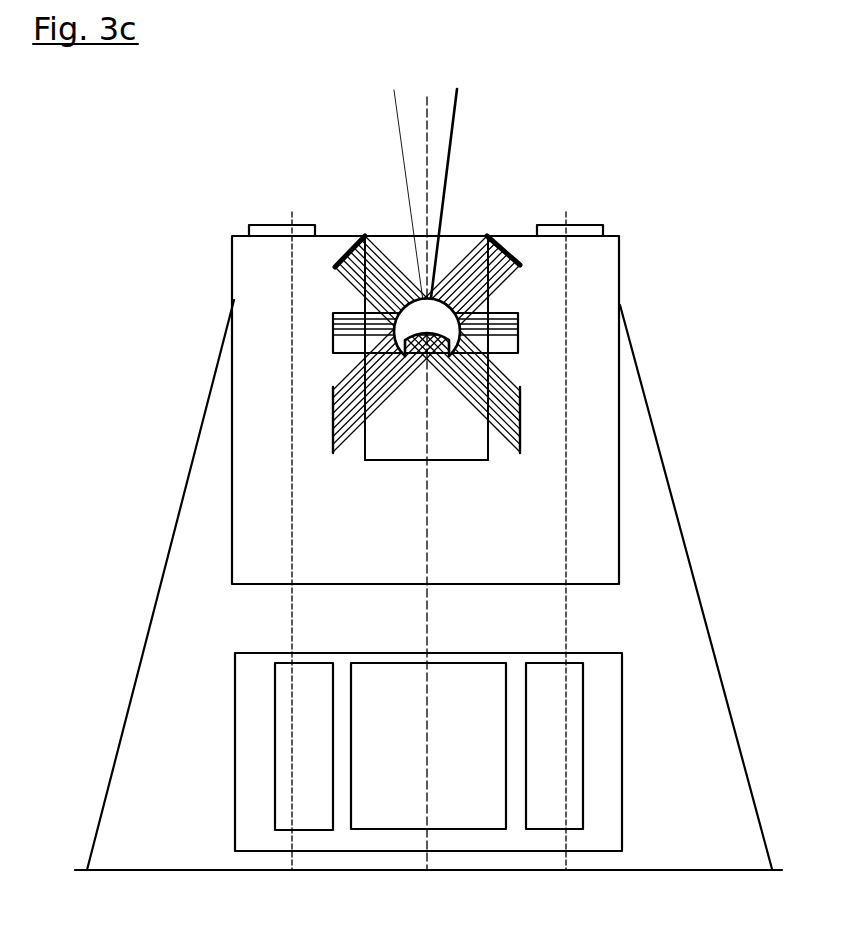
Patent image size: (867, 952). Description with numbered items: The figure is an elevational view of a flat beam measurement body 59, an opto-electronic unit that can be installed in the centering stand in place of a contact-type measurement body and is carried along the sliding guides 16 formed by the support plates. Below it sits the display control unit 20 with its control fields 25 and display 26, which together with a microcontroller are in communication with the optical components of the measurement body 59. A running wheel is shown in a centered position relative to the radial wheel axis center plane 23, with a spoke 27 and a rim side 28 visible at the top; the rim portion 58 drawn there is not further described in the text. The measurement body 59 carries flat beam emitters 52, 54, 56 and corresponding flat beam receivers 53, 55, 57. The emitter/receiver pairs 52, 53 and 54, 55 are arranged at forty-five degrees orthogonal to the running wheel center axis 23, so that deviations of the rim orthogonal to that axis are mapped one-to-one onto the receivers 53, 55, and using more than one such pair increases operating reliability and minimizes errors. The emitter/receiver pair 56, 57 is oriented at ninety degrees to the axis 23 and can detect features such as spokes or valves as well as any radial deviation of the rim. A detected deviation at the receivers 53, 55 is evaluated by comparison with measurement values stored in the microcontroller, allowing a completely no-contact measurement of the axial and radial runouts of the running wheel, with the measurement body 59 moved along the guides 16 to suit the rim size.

The sliding guide 16 is at (565, 512).
The display control unit 20 is at (253, 830).
The radial wheel axis center plane 23 is at (426, 98).
The control fields 25 is at (315, 819).
The display 26 is at (472, 815).
The spoke 27 is at (452, 127).
The rim side 28 is at (447, 346).
The flat beam emitter 52 is at (517, 257).
The flat beam receiver 53 is at (333, 422).
The flat beam emitter 54 is at (342, 253).
The flat beam receiver 55 is at (520, 422).
The flat beam emitter 56 is at (520, 320).
The flat beam receiver 57 is at (332, 325).
The lamp bulb 58 is at (405, 347).
The flat beam measurement body 59 is at (323, 526).